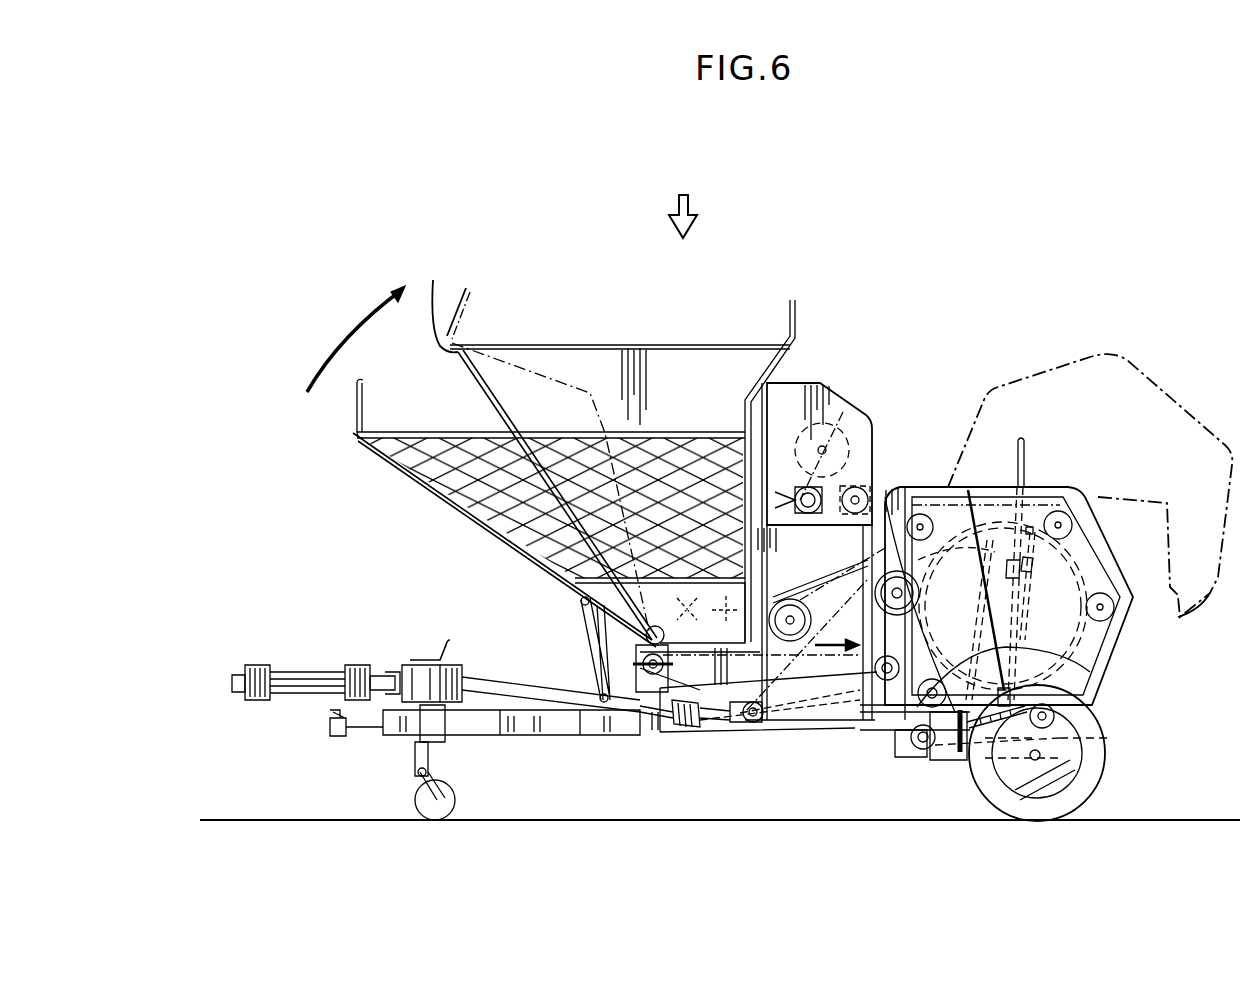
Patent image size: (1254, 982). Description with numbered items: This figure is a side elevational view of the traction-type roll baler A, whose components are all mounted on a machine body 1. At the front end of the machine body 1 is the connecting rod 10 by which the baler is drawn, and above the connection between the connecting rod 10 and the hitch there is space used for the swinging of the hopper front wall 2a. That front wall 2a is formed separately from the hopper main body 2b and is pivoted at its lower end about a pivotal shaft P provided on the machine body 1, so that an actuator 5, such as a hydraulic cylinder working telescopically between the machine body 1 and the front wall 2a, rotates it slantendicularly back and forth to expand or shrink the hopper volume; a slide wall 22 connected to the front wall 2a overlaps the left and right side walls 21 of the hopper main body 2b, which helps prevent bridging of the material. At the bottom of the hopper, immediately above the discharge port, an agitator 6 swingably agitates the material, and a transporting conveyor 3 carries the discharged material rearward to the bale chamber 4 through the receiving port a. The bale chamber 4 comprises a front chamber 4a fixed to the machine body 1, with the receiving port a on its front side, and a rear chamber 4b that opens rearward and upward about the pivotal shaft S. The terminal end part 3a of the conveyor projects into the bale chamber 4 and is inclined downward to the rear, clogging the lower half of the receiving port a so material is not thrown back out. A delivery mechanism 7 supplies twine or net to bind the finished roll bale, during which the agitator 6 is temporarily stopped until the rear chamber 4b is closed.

The machine body 1 is at (877, 448).
The front wall 2a is at (433, 285).
The hopper main body 2b is at (716, 360).
The side wall 21 is at (705, 448).
The slide wall 22 is at (458, 472).
The transporting conveyor 3 is at (690, 700).
The terminal end part 3a is at (1083, 675).
The bale chamber 4 is at (1040, 488).
The front chamber 4a is at (955, 490).
The rear chamber 4b is at (1073, 488).
The actuator 5 is at (578, 636).
The agitator 6 is at (793, 497).
The delivery mechanism 7 is at (851, 430).
The connecting rod 10 is at (392, 735).
The receiving port a is at (944, 572).
The pivotal shaft S is at (967, 495).
The pivotal shaft P is at (650, 672).
The roll baler A is at (683, 199).